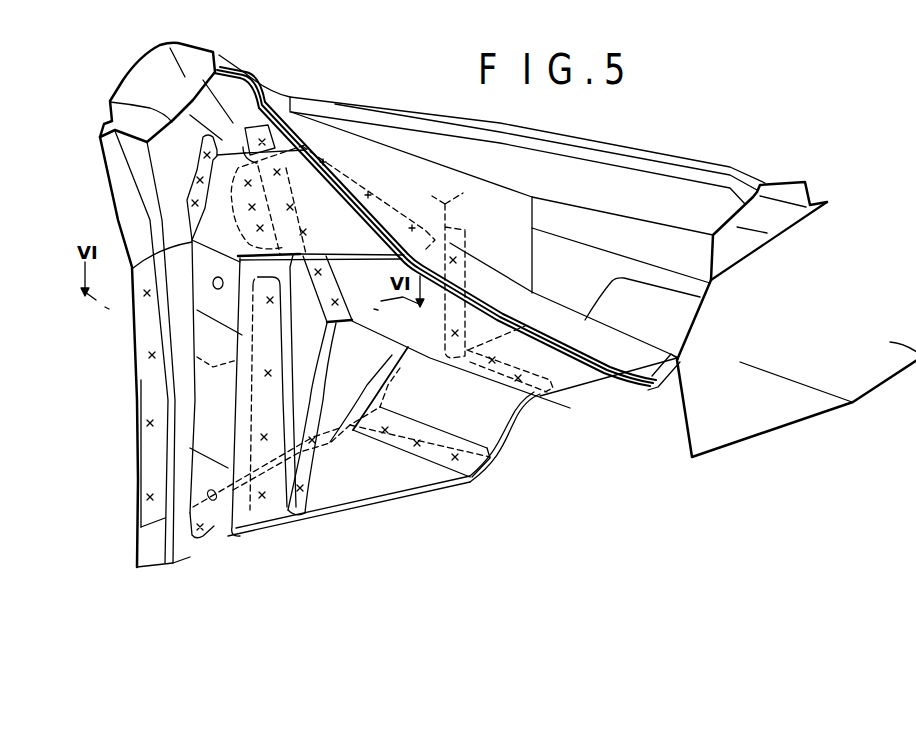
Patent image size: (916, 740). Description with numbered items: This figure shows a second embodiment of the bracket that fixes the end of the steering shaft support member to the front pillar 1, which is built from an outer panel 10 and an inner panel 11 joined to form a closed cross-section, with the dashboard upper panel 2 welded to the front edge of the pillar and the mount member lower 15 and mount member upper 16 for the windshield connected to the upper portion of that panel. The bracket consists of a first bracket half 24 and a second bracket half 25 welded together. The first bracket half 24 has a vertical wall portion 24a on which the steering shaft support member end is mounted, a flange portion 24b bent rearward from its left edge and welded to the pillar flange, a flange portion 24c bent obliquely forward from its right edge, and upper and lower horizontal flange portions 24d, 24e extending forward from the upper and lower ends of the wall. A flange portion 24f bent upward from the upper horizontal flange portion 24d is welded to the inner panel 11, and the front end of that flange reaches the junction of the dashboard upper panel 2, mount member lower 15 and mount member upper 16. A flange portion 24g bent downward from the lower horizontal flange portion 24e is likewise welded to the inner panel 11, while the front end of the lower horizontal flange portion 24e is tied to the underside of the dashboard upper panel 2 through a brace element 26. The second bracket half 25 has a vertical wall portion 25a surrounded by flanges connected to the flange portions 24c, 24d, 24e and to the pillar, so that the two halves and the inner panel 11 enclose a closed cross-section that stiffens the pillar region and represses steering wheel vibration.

The front pillar 1 is at (127, 92).
The outer panel 10 is at (123, 83).
The inner panel 11 is at (160, 118).
The dashboard upper panel 2 is at (631, 422).
The mount member lower 15 is at (796, 216).
The mount member upper 16 is at (768, 178).
The first bracket half 24 is at (222, 538).
The vertical wall portion 24a is at (207, 413).
The flange portion 24b is at (147, 378).
The flange portion 24c is at (313, 391).
The upper horizontal flange portion 24d is at (368, 222).
The lower horizontal flange portion 24e is at (422, 481).
The flange portion 24f is at (200, 167).
The flange portion 24g is at (203, 538).
The second bracket half 25 is at (299, 433).
The vertical wall portion 25a is at (343, 446).
The brace element 26 is at (500, 425).